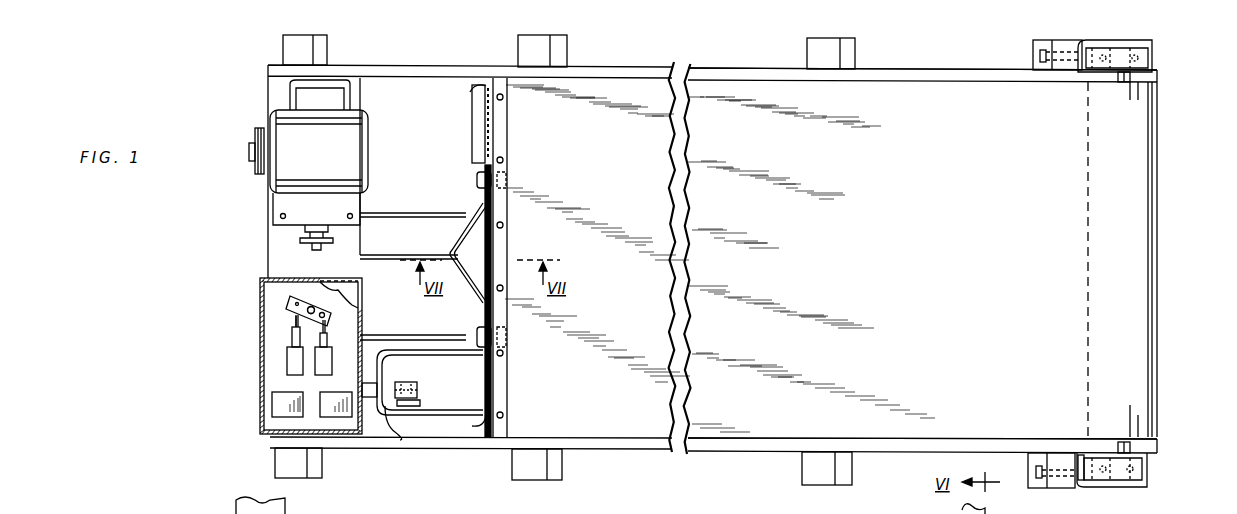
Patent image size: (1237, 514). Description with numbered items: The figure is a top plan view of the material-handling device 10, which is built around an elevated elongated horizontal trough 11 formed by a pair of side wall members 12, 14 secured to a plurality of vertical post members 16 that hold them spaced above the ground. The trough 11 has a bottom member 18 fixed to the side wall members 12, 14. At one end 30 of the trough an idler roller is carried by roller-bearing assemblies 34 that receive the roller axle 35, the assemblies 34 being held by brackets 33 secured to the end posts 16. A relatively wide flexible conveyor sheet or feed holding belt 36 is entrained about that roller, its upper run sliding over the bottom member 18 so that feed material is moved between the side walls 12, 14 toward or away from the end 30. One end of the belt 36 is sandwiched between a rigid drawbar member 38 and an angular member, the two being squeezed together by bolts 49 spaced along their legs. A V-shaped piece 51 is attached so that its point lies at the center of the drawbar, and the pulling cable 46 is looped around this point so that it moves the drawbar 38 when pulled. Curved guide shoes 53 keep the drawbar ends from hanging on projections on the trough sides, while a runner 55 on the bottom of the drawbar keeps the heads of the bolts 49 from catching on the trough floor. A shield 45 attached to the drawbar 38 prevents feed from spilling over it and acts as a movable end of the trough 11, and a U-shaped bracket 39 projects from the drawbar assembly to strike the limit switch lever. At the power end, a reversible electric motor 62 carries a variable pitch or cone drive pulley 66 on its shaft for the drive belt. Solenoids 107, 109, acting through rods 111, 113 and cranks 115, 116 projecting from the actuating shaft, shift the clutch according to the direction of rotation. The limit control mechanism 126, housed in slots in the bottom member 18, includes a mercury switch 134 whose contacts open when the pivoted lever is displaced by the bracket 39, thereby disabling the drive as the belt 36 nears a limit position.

The material-handling device 10 is at (250, 224).
The trough 11 is at (410, 104).
The side wall member 12 is at (835, 82).
The side wall member 14 is at (872, 442).
The vertical post members 16 is at (290, 46).
The bottom member 18 is at (413, 248).
The end 30 is at (1160, 252).
The brackets 33 is at (1118, 42).
The roller-bearing assemblies 34 is at (1148, 465).
The roller axle 35 is at (1128, 78).
The conveyor sheet or feed holding belt 36 is at (880, 312).
The drawbar member 38 is at (506, 194).
The U-shaped bracket 39 is at (412, 378).
The shield 45 is at (472, 118).
The cable 46 is at (364, 256).
The bolts 49 is at (496, 116).
The V-shaped piece 51 is at (460, 234).
The guide shoes 53 is at (470, 88).
The runner 55 is at (500, 176).
The reversible electric motor 62 is at (352, 148).
The variable pitch or cone drive pulley 66 is at (254, 126).
The solenoid 107 is at (275, 357).
The solenoid 109 is at (315, 368).
The rod 111 is at (294, 316).
The rod 113 is at (326, 326).
The crank 115 is at (292, 301).
The crank 116 is at (335, 312).
The limit control mechanism 126 is at (400, 440).
The mercury switch 134 is at (413, 372).